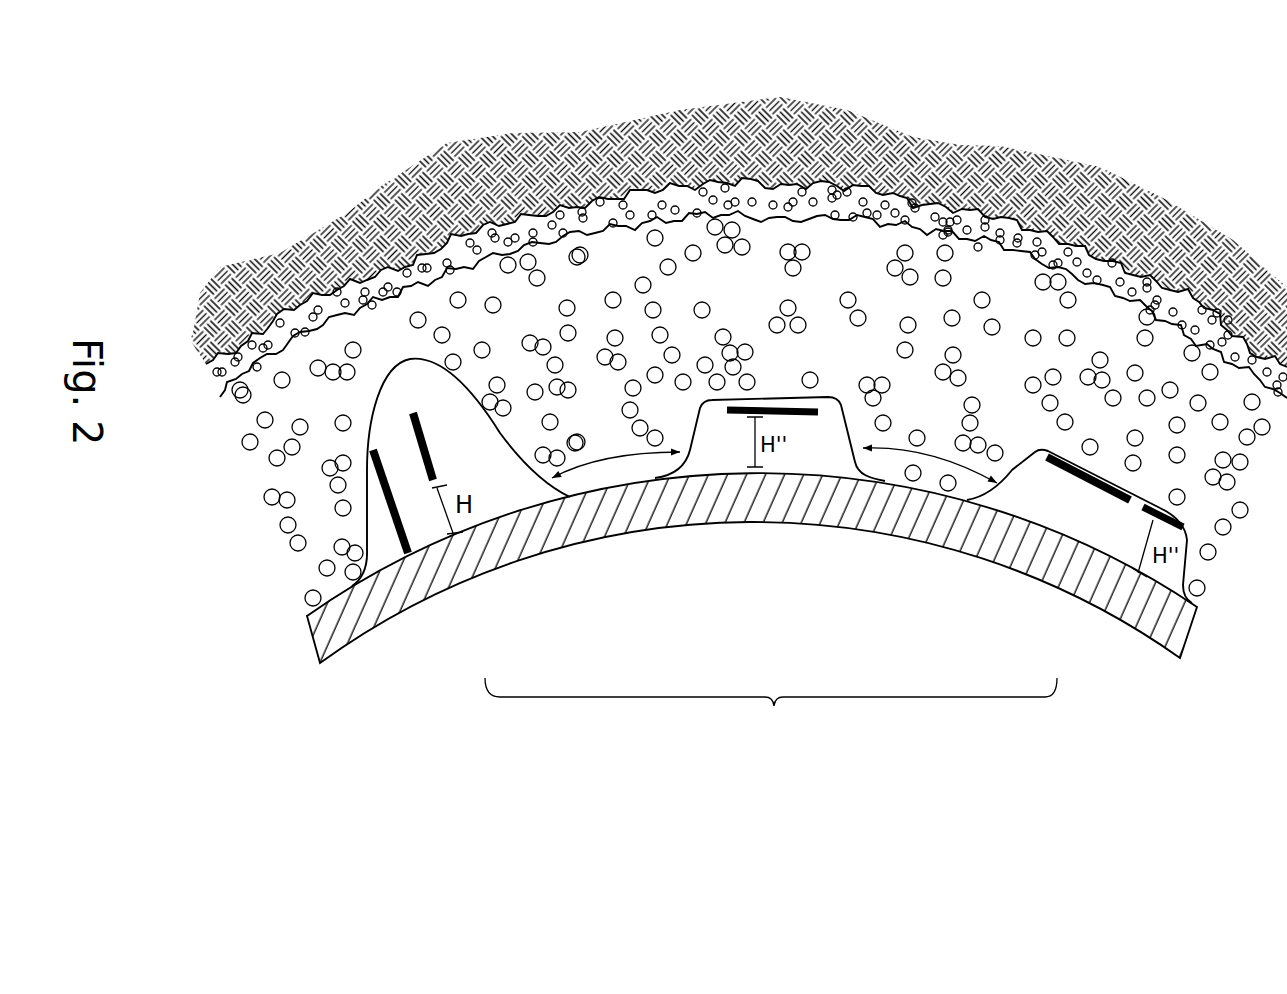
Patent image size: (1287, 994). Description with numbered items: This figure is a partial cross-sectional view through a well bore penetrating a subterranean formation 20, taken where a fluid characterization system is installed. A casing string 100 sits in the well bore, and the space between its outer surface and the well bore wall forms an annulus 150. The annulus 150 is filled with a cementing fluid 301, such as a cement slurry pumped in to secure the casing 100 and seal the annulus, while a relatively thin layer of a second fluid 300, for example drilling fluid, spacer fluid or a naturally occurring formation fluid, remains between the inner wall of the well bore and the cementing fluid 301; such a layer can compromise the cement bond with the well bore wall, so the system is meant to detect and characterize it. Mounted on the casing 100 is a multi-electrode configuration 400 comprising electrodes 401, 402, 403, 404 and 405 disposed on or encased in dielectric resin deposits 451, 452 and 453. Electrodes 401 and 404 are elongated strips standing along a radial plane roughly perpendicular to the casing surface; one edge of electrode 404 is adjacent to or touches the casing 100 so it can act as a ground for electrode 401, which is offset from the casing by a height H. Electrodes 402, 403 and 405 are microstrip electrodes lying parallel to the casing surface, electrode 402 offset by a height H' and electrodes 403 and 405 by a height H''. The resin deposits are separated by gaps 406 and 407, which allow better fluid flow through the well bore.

The formation 20 is at (813, 132).
The second fluid 300 is at (444, 262).
The cementing fluid 301 is at (745, 346).
The annulus 150 is at (272, 514).
The casing string 100 is at (394, 621).
The multi-electrode configuration 400 is at (771, 712).
The electrode 401 is at (438, 460).
The electrode 402 is at (798, 420).
The electrode 403 is at (1078, 482).
The electrode 404 is at (412, 532).
The electrode 405 is at (1143, 517).
The gap 406 is at (940, 456).
The gap 407 is at (608, 461).
The resin deposit 451 is at (378, 404).
The resin deposit 452 is at (840, 403).
The resin deposit 453 is at (1017, 480).